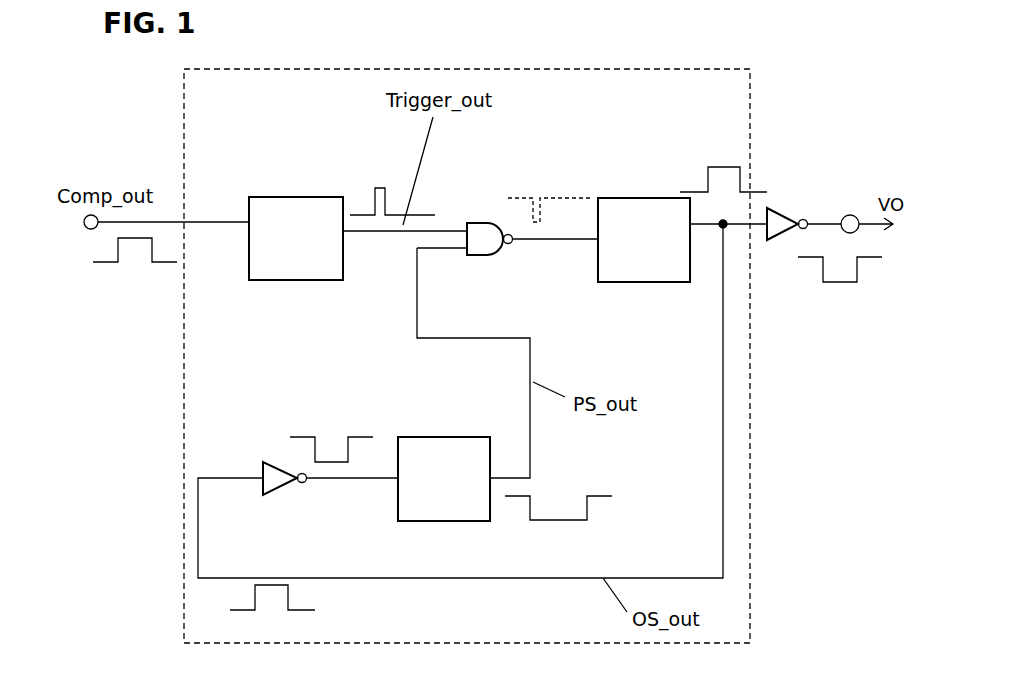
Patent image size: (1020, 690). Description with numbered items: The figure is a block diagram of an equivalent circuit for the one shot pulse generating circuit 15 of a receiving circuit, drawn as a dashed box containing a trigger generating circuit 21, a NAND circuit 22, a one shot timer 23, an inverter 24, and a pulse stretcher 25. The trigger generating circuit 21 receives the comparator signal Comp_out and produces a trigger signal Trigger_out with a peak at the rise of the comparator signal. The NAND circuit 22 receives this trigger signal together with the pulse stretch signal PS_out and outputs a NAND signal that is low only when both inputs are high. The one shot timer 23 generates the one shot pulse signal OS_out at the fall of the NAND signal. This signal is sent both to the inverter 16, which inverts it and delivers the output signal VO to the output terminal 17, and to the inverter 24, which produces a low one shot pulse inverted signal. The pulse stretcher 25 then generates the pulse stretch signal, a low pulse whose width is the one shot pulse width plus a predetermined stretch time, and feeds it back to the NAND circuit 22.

The one shot pulse generating circuit 15 is at (753, 135).
The inverter 16 is at (772, 213).
The output terminal 17 is at (849, 215).
The trigger generating circuit 21 is at (285, 196).
The NAND circuit 22 is at (475, 222).
The one shot timer 23 is at (625, 197).
The inverter 24 is at (275, 465).
The pulse stretcher 25 is at (430, 447).